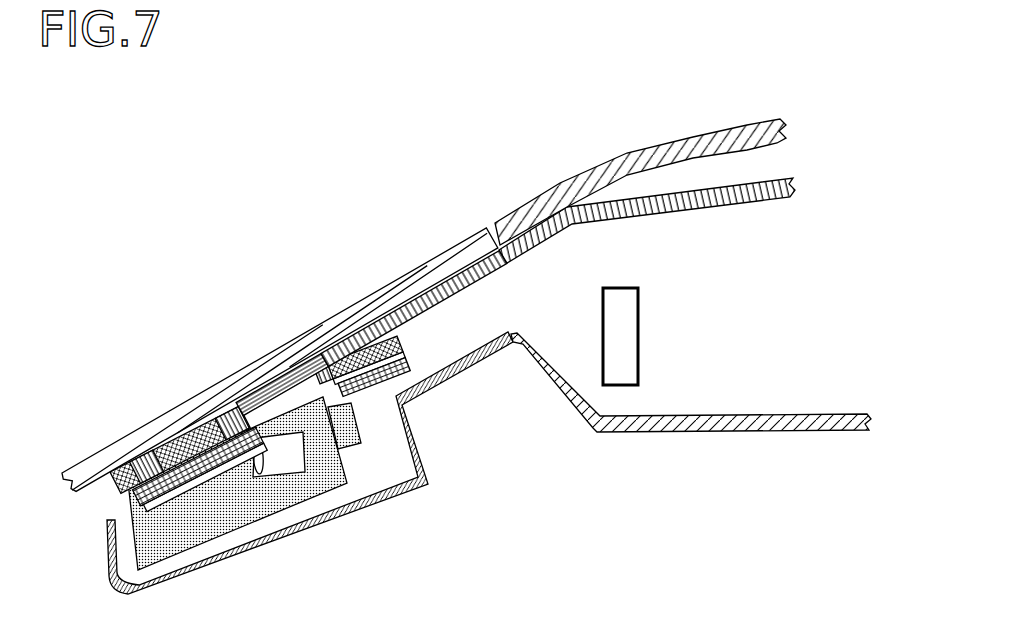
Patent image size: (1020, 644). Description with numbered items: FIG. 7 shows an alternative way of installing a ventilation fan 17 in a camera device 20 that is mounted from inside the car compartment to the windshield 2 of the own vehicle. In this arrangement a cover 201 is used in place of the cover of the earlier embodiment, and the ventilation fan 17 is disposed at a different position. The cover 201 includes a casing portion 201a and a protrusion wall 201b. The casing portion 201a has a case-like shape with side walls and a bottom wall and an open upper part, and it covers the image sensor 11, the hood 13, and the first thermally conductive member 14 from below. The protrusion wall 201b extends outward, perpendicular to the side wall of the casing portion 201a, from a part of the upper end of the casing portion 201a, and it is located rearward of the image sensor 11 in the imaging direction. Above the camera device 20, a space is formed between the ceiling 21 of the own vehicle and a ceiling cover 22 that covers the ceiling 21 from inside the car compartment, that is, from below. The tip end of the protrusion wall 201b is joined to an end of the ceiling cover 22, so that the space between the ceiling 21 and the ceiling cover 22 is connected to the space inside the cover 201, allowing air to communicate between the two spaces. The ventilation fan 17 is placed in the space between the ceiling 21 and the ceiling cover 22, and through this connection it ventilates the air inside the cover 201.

The windshield 2 is at (443, 256).
The image sensor 11 is at (376, 431).
The hood 13 is at (126, 520).
The first thermally conductive member 14 is at (282, 386).
The ventilation fan 17 is at (638, 330).
The camera device 20 is at (141, 197).
The ceiling 21 is at (709, 127).
The ceiling cover 22 is at (788, 414).
The cover 201 is at (324, 474).
The casing portion 201a is at (290, 540).
The protrusion wall 201b is at (486, 357).